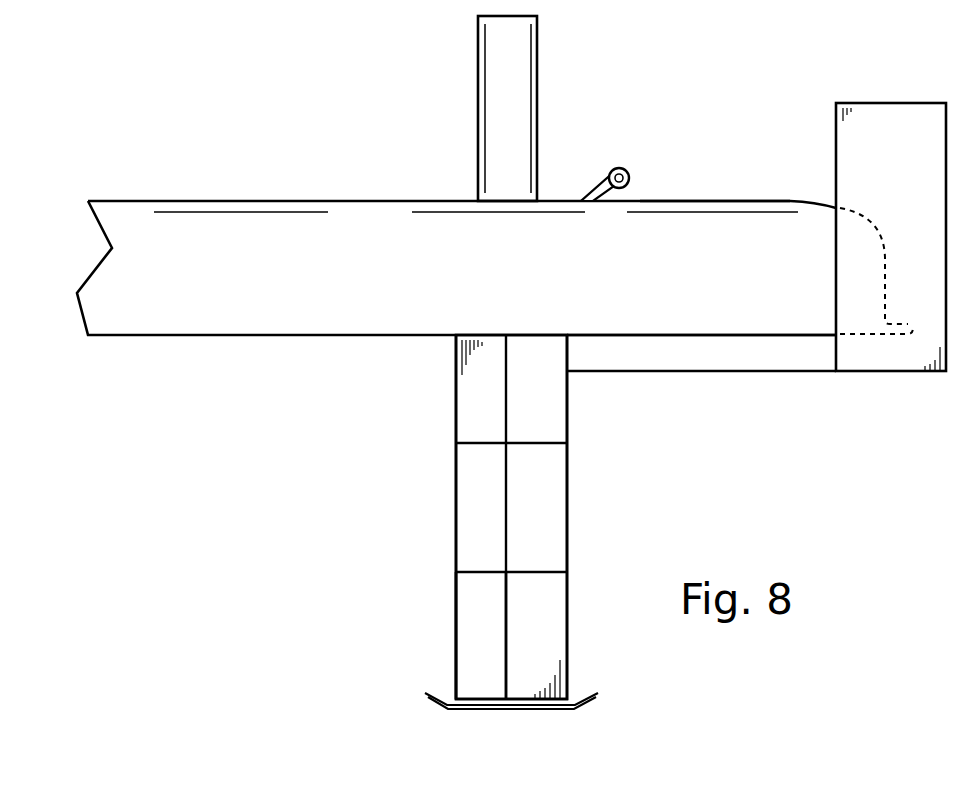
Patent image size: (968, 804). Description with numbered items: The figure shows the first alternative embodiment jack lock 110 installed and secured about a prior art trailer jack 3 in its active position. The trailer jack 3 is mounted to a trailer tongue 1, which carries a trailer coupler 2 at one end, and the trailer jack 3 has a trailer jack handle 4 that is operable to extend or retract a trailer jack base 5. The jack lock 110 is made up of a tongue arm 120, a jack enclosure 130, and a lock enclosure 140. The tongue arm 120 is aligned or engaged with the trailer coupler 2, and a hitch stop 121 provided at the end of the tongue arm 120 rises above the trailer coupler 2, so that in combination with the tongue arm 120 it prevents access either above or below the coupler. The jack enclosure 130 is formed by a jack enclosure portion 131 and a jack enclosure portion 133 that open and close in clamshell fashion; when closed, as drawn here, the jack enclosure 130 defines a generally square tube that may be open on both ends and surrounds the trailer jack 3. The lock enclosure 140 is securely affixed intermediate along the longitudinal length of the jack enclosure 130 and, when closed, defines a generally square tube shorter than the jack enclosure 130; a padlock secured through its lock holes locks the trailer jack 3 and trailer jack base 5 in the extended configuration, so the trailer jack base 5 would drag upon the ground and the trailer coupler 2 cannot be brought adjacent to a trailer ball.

The trailer tongue 1 is at (322, 196).
The trailer coupler 2 is at (787, 198).
The trailer jack 3 is at (540, 85).
The trailer jack handle 4 is at (620, 168).
The trailer jack base 5 is at (588, 703).
The jack lock 110 is at (419, 401).
The tongue arm 120 is at (812, 375).
The hitch stop 121 is at (839, 121).
The jack enclosure 130 is at (455, 641).
The jack enclosure portion 131 is at (468, 614).
The jack enclosure portion 133 is at (550, 383).
The lock enclosure 140 is at (453, 507).